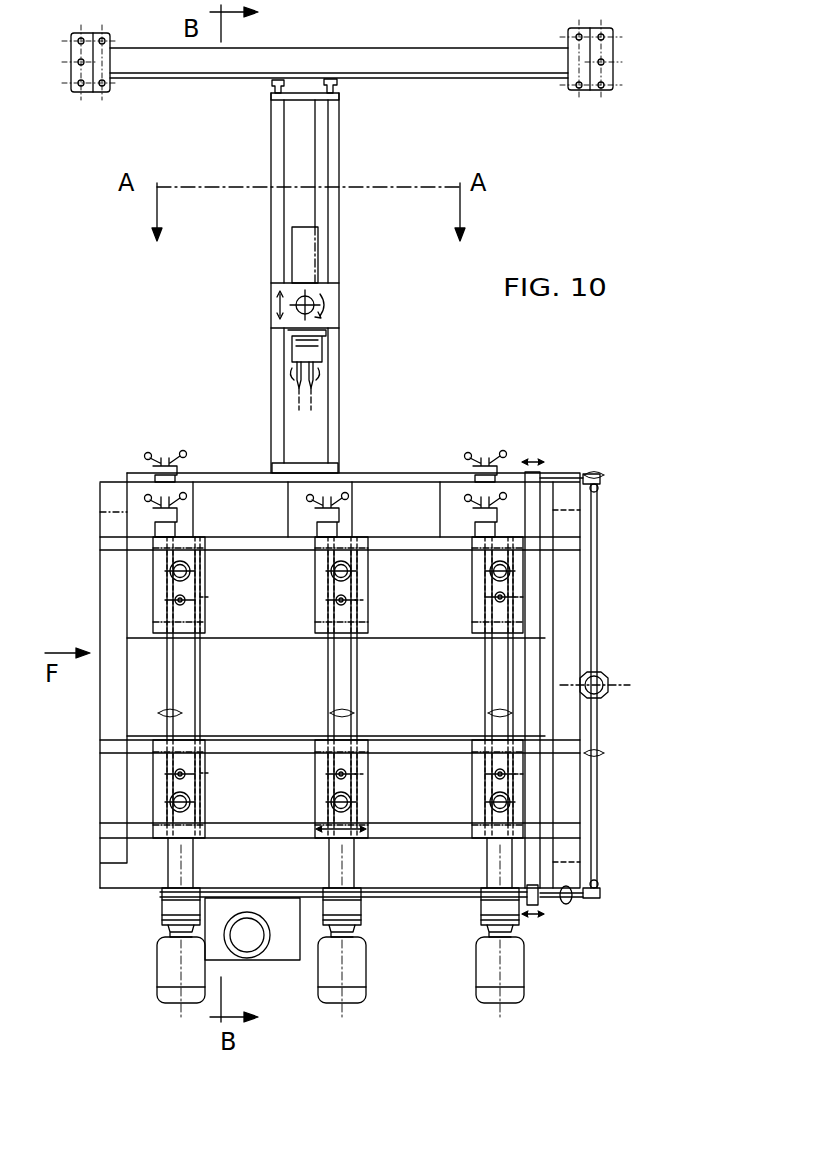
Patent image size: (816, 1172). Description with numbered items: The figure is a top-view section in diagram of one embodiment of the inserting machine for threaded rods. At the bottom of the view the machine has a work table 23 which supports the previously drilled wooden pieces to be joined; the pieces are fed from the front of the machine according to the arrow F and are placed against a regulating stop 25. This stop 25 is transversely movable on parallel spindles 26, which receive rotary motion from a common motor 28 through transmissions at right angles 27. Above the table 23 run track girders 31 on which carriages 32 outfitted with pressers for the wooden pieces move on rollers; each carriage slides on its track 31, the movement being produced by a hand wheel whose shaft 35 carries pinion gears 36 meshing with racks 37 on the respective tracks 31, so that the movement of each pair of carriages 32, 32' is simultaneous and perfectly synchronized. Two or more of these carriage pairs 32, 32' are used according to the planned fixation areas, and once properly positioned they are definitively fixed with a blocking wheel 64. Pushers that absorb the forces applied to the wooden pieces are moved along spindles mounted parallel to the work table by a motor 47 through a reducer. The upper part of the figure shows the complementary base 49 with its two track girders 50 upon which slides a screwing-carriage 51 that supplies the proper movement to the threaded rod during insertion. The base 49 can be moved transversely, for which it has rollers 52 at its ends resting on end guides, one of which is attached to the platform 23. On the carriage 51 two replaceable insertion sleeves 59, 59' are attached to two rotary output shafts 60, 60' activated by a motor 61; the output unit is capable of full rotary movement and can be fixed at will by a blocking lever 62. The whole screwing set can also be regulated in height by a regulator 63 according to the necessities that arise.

The rollers 52 is at (335, 82).
The complementary base 49 is at (317, 207).
The track girders 50 is at (340, 248).
The motor 61 is at (301, 262).
The screwing-carriage 51 is at (321, 318).
The blocking lever 62 is at (290, 342).
The rotary output shaft 60 is at (354, 373).
The rotary output shaft 60' is at (249, 372).
The insertion sleeve 59 is at (347, 400).
The insertion sleeve 59' is at (250, 400).
The work table 23 is at (245, 568).
The track girders 31 is at (430, 540).
The racks 37 is at (237, 637).
The shaft 35 is at (170, 690).
The pinion gears 36 is at (340, 622).
The carriages 32 is at (296, 585).
The carriages 32' is at (292, 789).
The regulator 63 is at (485, 470).
The blocking wheel 64 is at (478, 507).
The regulating stop 25 is at (535, 698).
The motor 28 is at (608, 676).
The transmissions at right angles 27 is at (592, 476).
The spindles 26 is at (547, 472).
The motor 47 is at (366, 958).